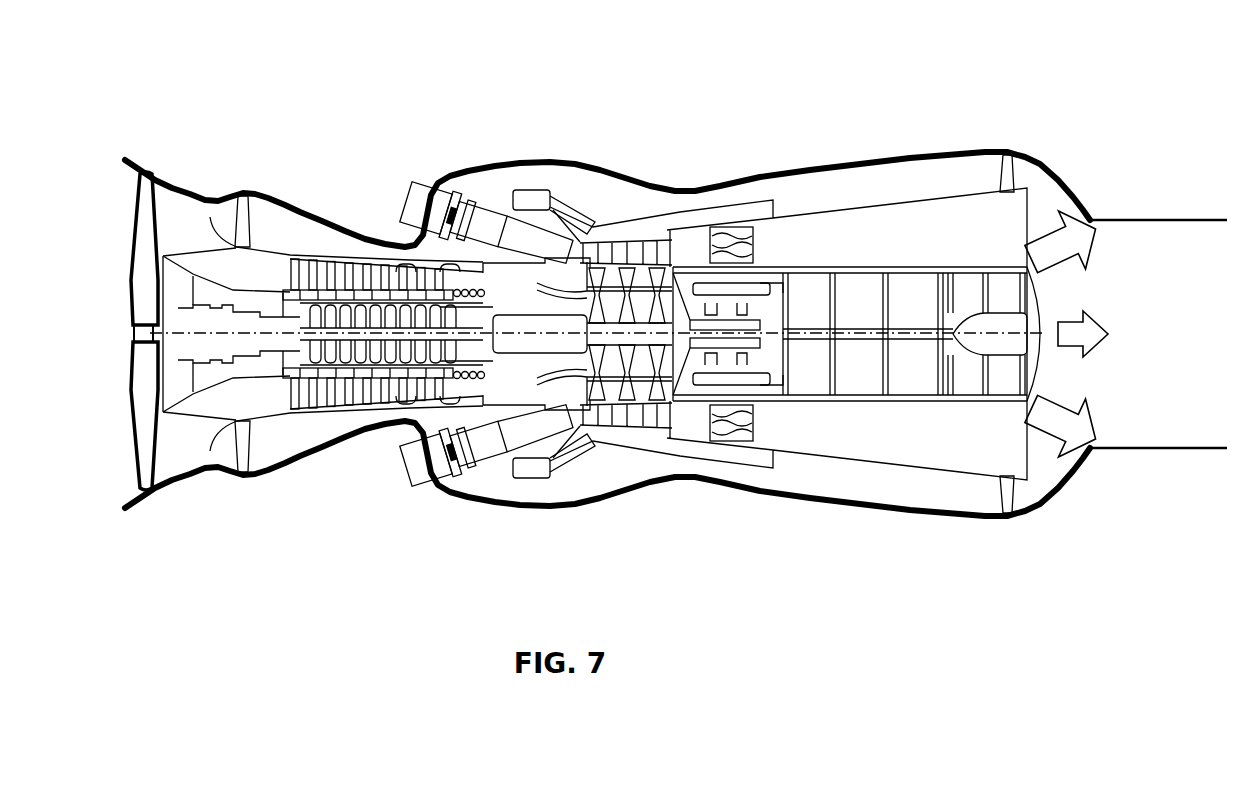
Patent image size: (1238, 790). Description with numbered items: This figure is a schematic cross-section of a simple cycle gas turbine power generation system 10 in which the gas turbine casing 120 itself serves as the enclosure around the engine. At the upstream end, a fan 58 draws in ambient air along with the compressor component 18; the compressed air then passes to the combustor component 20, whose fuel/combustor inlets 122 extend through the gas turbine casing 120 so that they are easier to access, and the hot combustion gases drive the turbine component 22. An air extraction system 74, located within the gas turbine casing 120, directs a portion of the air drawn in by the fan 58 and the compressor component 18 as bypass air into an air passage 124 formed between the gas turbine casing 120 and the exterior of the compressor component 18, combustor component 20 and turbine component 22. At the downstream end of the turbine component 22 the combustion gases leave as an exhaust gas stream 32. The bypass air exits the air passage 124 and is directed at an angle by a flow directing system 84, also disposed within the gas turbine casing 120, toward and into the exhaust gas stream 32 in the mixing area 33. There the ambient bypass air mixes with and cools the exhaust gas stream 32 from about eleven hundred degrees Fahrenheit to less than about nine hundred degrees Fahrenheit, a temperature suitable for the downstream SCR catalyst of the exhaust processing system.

The simple cycle gas turbine power generation system 10 is at (777, 107).
The compressor component 18 is at (344, 418).
The combustor component 20 is at (547, 494).
The turbine component 22 is at (629, 468).
The exhaust gas stream 32 is at (1084, 347).
The mixing area 33 is at (1180, 338).
The fan 58 is at (131, 408).
The air extraction system 74 is at (237, 246).
The flow directing system 84 is at (1013, 165).
The gas turbine casing 120 is at (535, 160).
The fuel/combustor inlets 122 is at (400, 188).
The air passage 124 is at (310, 222).